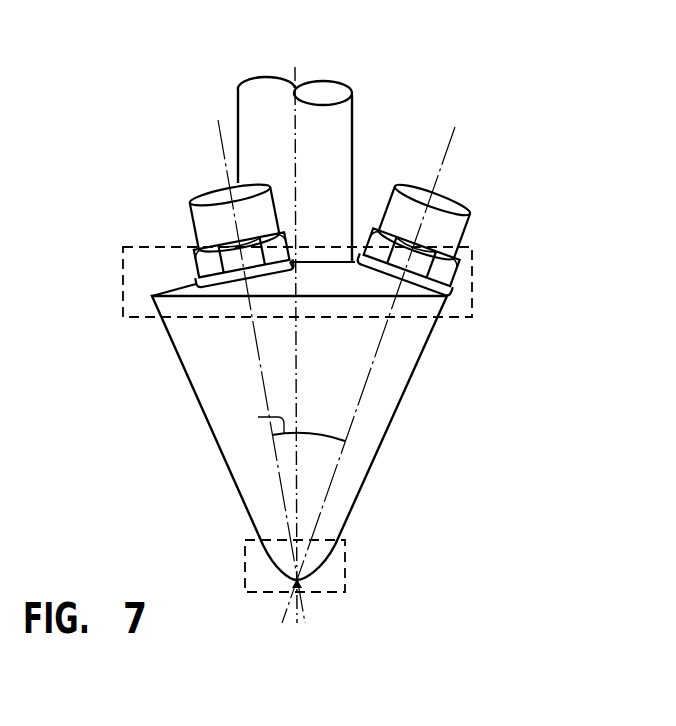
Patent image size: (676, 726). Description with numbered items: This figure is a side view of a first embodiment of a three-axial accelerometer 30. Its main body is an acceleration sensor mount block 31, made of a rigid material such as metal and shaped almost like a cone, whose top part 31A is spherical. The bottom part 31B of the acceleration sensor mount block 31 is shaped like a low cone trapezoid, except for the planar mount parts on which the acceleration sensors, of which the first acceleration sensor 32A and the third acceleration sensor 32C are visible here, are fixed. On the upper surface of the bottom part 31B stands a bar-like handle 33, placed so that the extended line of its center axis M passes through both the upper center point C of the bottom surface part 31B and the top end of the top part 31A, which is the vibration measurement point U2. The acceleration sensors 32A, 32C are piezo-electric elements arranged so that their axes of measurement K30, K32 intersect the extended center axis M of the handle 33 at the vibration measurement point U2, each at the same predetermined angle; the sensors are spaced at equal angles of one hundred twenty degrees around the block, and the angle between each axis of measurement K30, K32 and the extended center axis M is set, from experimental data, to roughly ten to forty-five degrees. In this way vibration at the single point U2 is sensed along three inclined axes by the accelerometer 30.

The three-axial accelerometer 30 is at (540, 397).
The acceleration sensor mount block 31 is at (410, 353).
The top part 31A is at (345, 552).
The bottom part 31B is at (472, 282).
The first acceleration sensor 32A is at (448, 196).
The third acceleration sensor 32C is at (218, 192).
The handle 33 is at (342, 120).
The center axis of the handle M is at (297, 72).
The upper center point C is at (292, 262).
The axis of measurement K30 is at (462, 128).
The axis of measurement K32 is at (218, 120).
The vibration measurement point U2 is at (300, 582).